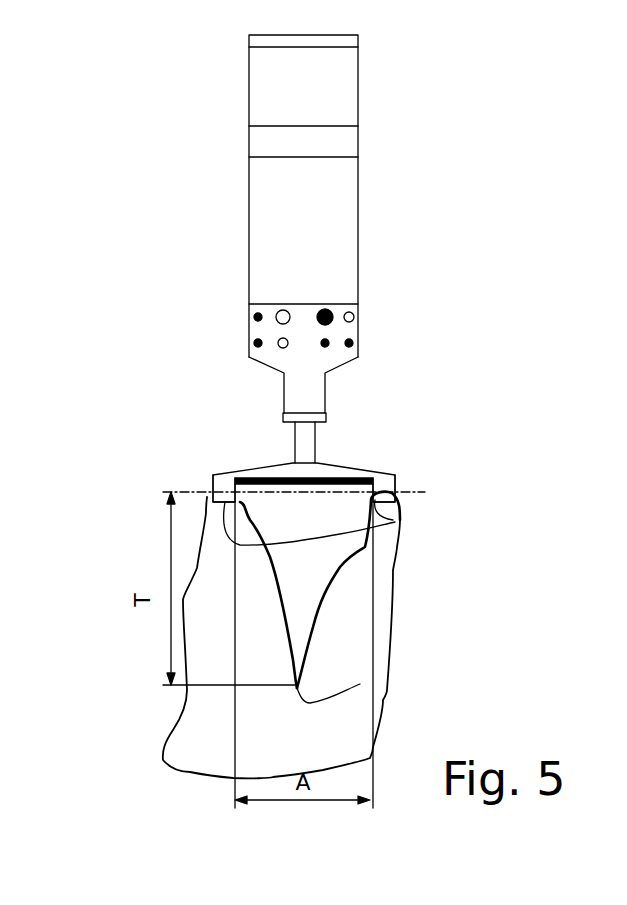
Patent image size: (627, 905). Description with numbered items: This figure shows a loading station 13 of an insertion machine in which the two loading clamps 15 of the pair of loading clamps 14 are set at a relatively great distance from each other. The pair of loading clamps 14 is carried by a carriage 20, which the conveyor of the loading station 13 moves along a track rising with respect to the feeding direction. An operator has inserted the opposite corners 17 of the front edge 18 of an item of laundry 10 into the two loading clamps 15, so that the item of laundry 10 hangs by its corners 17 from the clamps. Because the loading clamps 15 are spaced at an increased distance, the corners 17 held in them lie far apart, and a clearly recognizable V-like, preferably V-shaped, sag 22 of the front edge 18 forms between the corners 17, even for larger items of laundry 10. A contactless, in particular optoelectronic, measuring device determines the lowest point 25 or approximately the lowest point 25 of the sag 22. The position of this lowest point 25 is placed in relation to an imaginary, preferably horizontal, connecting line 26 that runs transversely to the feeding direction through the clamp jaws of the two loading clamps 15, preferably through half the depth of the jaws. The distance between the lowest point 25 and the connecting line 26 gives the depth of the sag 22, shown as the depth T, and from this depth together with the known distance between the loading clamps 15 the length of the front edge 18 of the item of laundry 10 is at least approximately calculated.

The item of laundry 10 is at (200, 747).
The loading station 13 is at (392, 284).
The pair of loading clamps 14 is at (370, 462).
The loading clamp 15 is at (213, 480).
The corner 17 is at (395, 522).
The front edge 18 is at (395, 590).
The sag 22 is at (310, 640).
The carriage 20 is at (303, 446).
The lowest point 25 is at (360, 684).
The connecting line 26 is at (422, 492).